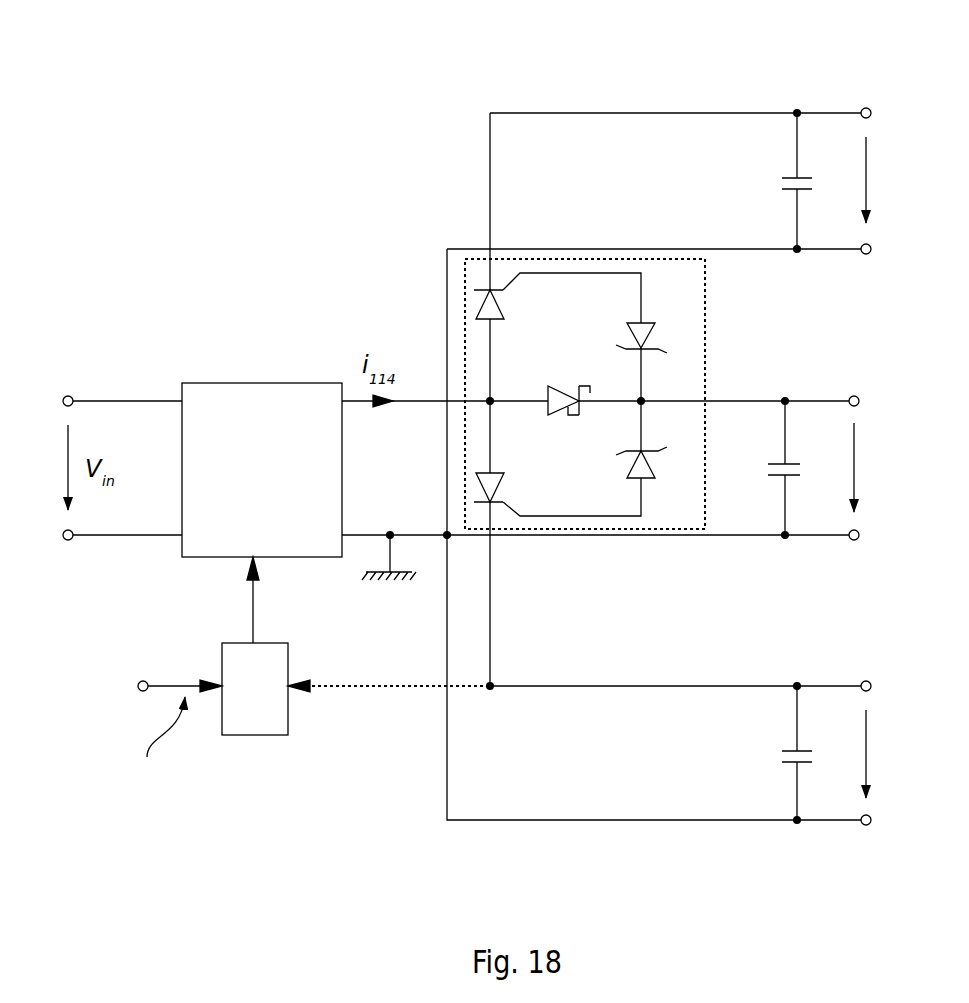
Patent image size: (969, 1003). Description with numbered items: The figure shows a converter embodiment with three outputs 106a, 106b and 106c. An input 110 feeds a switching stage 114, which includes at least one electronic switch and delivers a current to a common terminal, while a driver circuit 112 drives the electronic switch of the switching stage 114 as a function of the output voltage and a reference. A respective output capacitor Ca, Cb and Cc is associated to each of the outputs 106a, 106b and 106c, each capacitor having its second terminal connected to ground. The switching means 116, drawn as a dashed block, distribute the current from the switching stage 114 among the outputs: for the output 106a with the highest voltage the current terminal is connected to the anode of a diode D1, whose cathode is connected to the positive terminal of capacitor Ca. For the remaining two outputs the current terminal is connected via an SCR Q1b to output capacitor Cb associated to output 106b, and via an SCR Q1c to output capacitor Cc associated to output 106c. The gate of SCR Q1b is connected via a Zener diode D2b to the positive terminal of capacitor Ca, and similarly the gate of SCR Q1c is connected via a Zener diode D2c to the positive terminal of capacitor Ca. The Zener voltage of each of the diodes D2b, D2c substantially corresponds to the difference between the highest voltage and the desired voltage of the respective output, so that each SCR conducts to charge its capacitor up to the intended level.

The input terminals / input voltage source 110 is at (69, 385).
The switching stage 114 is at (208, 382).
The driver circuit 112 is at (255, 723).
The switching means 116 is at (569, 362).
The output 106a is at (854, 377).
The output 106b is at (866, 662).
The output 106c is at (866, 89).
The output capacitor Ca is at (777, 457).
The output capacitor Cb is at (789, 745).
The output capacitor Cc is at (789, 173).
The SCR Q1c is at (501, 322).
The SCR Q1b is at (501, 472).
The diode D1 is at (562, 383).
The Zener diode D2c is at (649, 320).
The Zener diode D2b is at (649, 481).